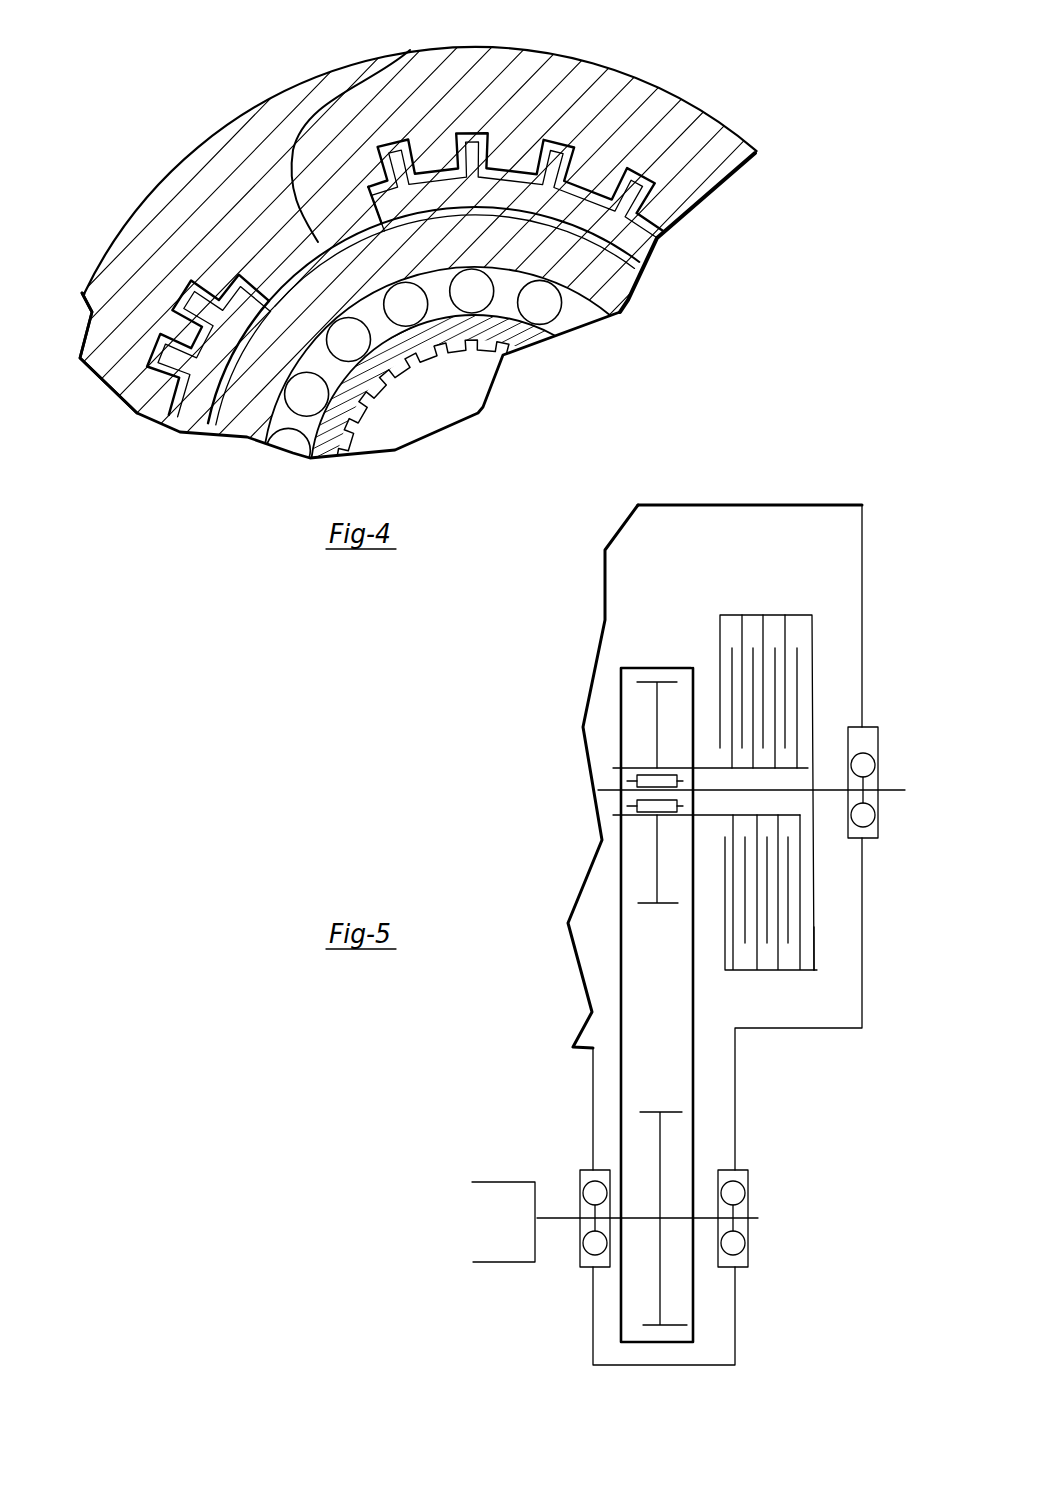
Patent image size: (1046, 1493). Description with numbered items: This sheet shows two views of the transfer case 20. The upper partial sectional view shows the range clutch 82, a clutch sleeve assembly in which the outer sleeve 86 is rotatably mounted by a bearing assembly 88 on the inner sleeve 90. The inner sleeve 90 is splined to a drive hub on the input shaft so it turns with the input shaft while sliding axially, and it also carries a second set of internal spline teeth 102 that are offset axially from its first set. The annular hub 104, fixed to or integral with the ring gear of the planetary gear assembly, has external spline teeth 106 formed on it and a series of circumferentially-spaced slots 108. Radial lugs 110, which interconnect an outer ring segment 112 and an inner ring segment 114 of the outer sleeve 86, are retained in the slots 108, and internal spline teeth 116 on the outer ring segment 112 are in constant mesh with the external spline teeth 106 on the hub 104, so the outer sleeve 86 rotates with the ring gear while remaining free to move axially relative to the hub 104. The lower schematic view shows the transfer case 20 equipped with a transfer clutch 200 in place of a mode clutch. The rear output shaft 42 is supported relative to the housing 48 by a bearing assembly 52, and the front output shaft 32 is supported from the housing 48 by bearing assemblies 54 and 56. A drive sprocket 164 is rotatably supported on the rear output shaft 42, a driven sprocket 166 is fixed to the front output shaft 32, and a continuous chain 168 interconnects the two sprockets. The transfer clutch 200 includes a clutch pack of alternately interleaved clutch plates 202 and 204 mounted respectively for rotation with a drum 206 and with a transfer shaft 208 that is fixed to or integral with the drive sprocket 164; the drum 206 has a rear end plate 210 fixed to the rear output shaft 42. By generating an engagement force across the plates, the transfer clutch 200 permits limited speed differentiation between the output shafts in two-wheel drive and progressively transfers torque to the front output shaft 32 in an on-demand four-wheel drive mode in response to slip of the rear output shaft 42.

In FIG. 5, the transfer case 20 is at (690, 473).
In FIG. 5, the front output shaft 32 is at (565, 1218).
In FIG. 5, the rear output shaft 42 is at (890, 780).
In FIG. 5, the housing 48 is at (832, 504).
In FIG. 5, the bearing assembly 52 is at (868, 820).
In FIG. 5, the bearing assembly 54 is at (593, 1243).
In FIG. 5, the bearing assembly 56 is at (740, 1190).
In FIG. 4, the range clutch 82 is at (337, 68).
In FIG. 4, the outer sleeve 86 is at (177, 158).
In FIG. 4, the bearing assembly 88 is at (580, 333).
In FIG. 4, the inner sleeve 90 is at (335, 457).
In FIG. 4, the second set of internal spline teeth 102 is at (492, 352).
In FIG. 4, the annular hub 104 is at (190, 424).
In FIG. 4, the external spline teeth 106 is at (164, 384).
In FIG. 4, the slots 108 is at (263, 100).
In FIG. 4, the radial lugs 110 is at (392, 58).
In FIG. 4, the outer ring segment 112 is at (147, 217).
In FIG. 4, the inner ring segment 114 is at (585, 318).
In FIG. 4, the internal spline teeth 116 is at (593, 168).
In FIG. 5, the drive sprocket 164 is at (655, 713).
In FIG. 5, the driven sprocket 166 is at (663, 1140).
In FIG. 5, the chain 168 is at (693, 1085).
In FIG. 5, the transfer clutch 200 is at (750, 586).
In FIG. 5, the clutch plates 202 is at (780, 958).
In FIG. 5, the clutch plates 204 is at (720, 672).
In FIG. 5, the drum 206 is at (797, 614).
In FIG. 5, the transfer shaft 208 is at (713, 745).
In FIG. 5, the rear end plate 210 is at (817, 927).